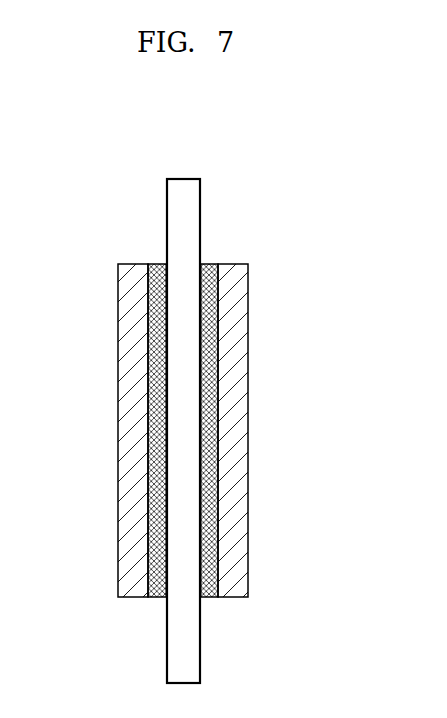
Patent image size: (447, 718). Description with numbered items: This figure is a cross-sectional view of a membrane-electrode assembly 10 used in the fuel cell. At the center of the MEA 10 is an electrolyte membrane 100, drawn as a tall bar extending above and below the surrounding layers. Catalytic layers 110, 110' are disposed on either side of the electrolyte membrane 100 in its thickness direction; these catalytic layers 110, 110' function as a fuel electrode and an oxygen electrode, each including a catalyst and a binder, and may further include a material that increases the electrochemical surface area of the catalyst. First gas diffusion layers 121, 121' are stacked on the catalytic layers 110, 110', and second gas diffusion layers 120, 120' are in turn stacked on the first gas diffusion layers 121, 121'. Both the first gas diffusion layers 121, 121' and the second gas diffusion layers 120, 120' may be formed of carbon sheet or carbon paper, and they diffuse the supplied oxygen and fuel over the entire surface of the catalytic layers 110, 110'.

The membrane-electrode assembly 10 is at (85, 202).
The electrolyte membrane 100 is at (182, 185).
The catalytic layer 110 is at (147, 458).
The catalytic layer 110' is at (222, 458).
The second gas diffusion layer 120 is at (95, 430).
The second gas diffusion layer 120' is at (274, 430).
The first gas diffusion layer 121 is at (142, 403).
The first gas diffusion layer 121' is at (225, 403).